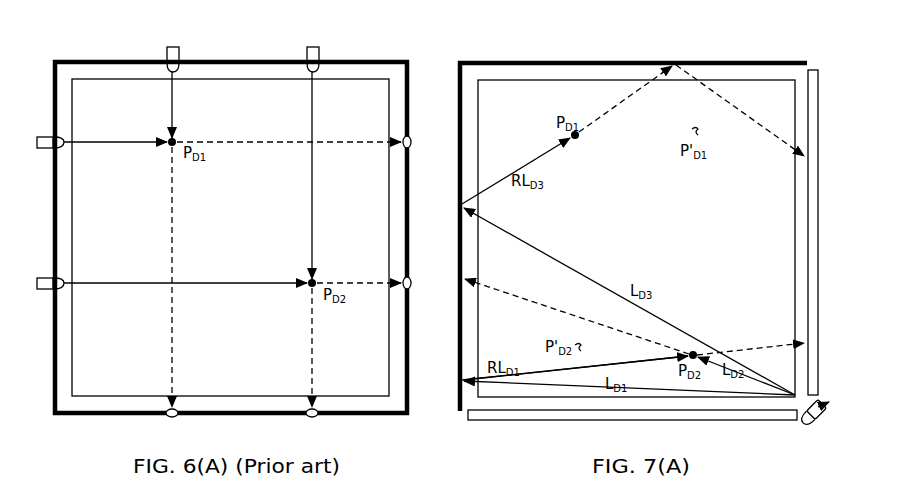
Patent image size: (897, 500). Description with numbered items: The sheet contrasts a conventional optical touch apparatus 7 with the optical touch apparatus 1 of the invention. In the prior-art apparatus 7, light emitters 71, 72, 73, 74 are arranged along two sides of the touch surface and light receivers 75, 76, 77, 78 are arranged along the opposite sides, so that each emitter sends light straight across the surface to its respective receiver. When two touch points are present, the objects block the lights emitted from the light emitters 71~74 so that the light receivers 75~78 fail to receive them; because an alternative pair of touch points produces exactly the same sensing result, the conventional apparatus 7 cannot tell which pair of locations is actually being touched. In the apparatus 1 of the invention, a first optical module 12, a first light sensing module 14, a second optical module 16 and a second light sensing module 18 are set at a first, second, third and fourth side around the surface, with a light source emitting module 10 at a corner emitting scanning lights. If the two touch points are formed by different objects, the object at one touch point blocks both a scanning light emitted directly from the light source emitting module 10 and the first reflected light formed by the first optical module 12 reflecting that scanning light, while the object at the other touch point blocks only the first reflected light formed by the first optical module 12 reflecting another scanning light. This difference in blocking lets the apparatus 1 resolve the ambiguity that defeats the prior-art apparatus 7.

The optical touch apparatus 7 is at (116, 46).
The light emitter 71 is at (43, 150).
The light emitter 72 is at (43, 292).
The light emitter 73 is at (178, 47).
The light emitter 74 is at (317, 47).
The light receiver 75 is at (413, 140).
The light receiver 76 is at (413, 281).
The light receiver 77 is at (168, 418).
The light receiver 78 is at (306, 418).
The optical touch apparatus 1 is at (698, 51).
The light source emitting module 10 is at (806, 424).
The first optical module 12 is at (458, 233).
The first light sensing module 14 is at (818, 240).
The second optical module 16 is at (533, 62).
The second light sensing module 18 is at (553, 415).